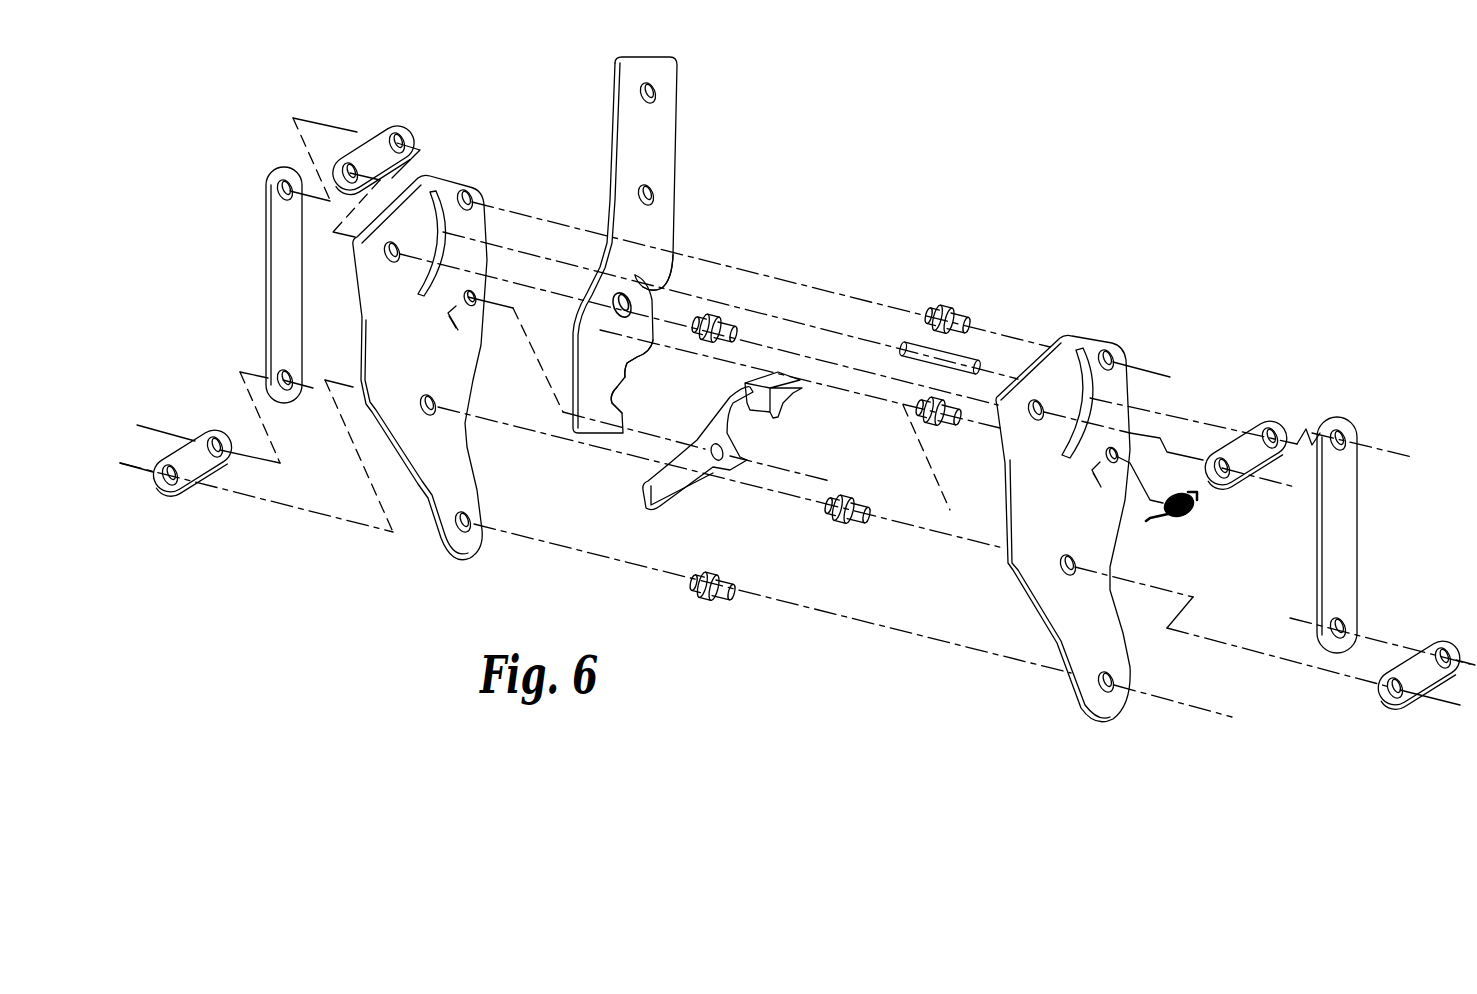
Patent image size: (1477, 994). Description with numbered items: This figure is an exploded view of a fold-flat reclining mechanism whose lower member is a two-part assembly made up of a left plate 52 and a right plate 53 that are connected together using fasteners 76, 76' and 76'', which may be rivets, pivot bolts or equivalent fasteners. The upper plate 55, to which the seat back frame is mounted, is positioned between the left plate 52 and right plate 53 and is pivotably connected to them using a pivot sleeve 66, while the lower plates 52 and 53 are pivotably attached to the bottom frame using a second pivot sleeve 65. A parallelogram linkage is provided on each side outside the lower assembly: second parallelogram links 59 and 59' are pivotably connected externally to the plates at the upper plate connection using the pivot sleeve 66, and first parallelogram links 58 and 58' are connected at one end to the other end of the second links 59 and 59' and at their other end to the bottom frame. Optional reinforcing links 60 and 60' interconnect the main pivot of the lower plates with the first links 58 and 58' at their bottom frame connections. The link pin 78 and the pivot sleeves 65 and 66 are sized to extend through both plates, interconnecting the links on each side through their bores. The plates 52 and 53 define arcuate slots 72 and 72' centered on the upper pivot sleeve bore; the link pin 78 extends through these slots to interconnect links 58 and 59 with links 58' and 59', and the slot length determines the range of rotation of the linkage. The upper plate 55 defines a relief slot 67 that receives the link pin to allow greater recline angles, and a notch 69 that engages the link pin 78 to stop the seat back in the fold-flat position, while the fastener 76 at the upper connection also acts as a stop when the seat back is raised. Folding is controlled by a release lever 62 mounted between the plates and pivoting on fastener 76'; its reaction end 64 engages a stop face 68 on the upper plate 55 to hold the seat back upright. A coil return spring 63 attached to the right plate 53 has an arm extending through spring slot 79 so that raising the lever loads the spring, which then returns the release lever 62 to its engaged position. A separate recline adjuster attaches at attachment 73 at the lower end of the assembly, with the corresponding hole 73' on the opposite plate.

The left plate 52 is at (472, 180).
The right plate 53 is at (1110, 338).
The upper plate 55 is at (651, 57).
The first parallelogram link 58 is at (1371, 535).
The first parallelogram link 58' is at (258, 285).
The second parallelogram link 59 is at (1246, 432).
The second parallelogram link 59' is at (397, 141).
The reinforcing link 60 is at (1419, 645).
The reinforcing link 60' is at (192, 491).
The release lever 62 is at (802, 383).
The return spring 63 is at (1195, 532).
The reaction end 64 is at (640, 505).
The second pivot sleeve 65 is at (846, 528).
The pivot sleeve 66 is at (708, 349).
The relief slot 67 is at (690, 272).
The stop face 68 is at (625, 418).
The notch 69 is at (625, 373).
The arcuate slot 72 is at (1081, 365).
The arcuate slot 72' is at (415, 263).
The attachment 73 is at (1122, 716).
The pivot hole 73' is at (501, 510).
The fastener 76 is at (940, 296).
The fastener 76' is at (953, 445).
The fastener 76'' is at (713, 614).
The link pin 78 is at (901, 350).
The spring slot 79 is at (1093, 490).